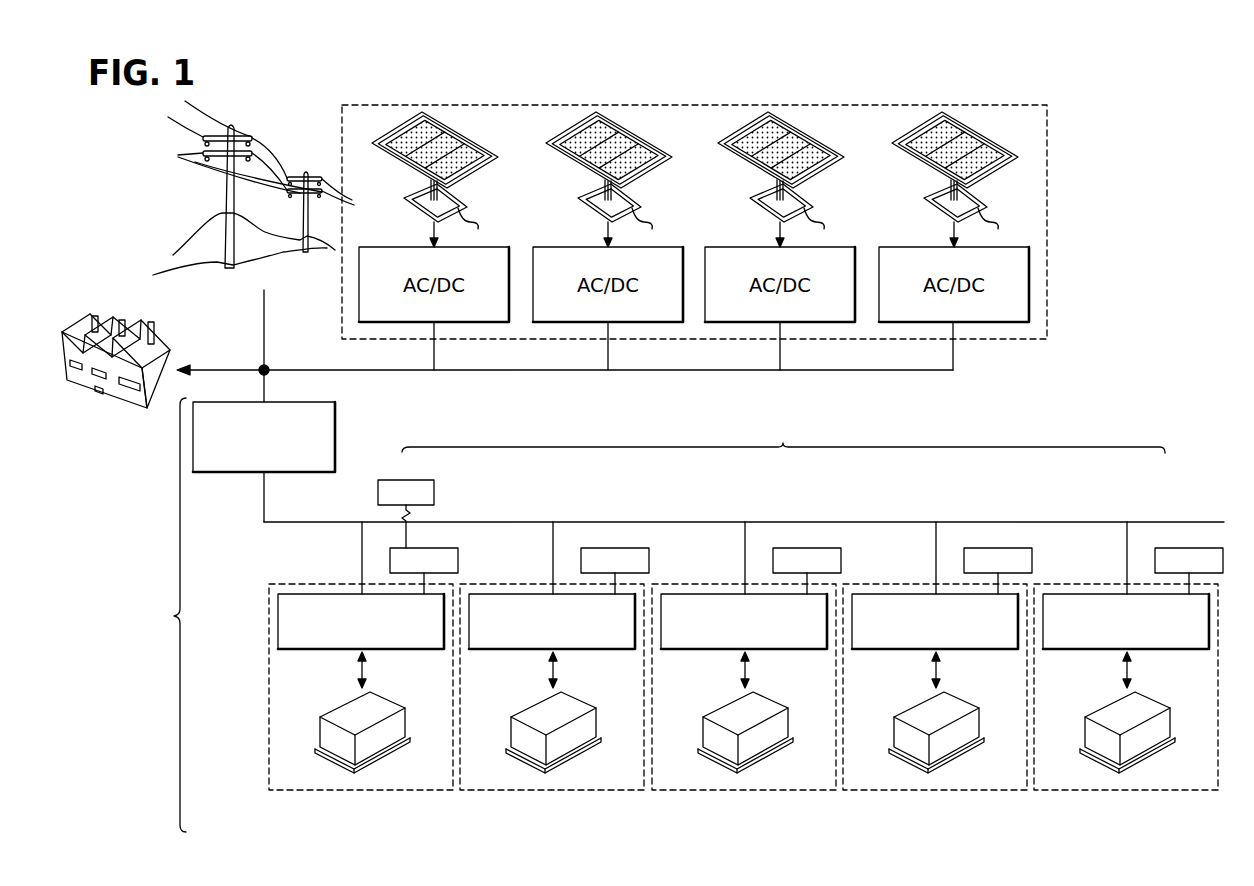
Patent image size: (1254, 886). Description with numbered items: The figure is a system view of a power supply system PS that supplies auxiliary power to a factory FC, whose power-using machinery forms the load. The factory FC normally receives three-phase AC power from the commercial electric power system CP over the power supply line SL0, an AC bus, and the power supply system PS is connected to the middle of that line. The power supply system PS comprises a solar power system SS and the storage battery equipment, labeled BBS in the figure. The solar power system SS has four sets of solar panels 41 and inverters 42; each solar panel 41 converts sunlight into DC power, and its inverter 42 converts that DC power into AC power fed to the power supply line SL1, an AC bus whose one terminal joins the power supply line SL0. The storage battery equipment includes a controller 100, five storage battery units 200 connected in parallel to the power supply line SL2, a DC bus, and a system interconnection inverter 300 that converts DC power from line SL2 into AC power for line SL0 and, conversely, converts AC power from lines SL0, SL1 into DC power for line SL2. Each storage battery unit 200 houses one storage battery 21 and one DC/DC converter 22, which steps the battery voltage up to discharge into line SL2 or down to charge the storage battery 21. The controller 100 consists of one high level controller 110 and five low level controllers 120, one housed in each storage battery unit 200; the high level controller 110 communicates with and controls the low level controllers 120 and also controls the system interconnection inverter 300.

The solar panel 41 is at (460, 133).
The inverter 42 is at (492, 247).
The system interconnection inverter 300 is at (335, 436).
The controller 100 is at (783, 436).
The high level controller 110 is at (408, 480).
The low level controller 120 is at (806, 526).
The storage battery unit 200 is at (743, 712).
The storage battery 21 is at (772, 758).
The DC/DC converter 22 is at (746, 608).
The electric power system CP is at (285, 143).
The solar power system SS is at (1000, 339).
The power supply system PS is at (1095, 388).
The power supply line SL0 is at (262, 310).
The power supply line SL1 is at (706, 372).
The power supply line SL2 is at (672, 521).
The factory FC is at (88, 385).
The battery bank system BBS is at (155, 615).